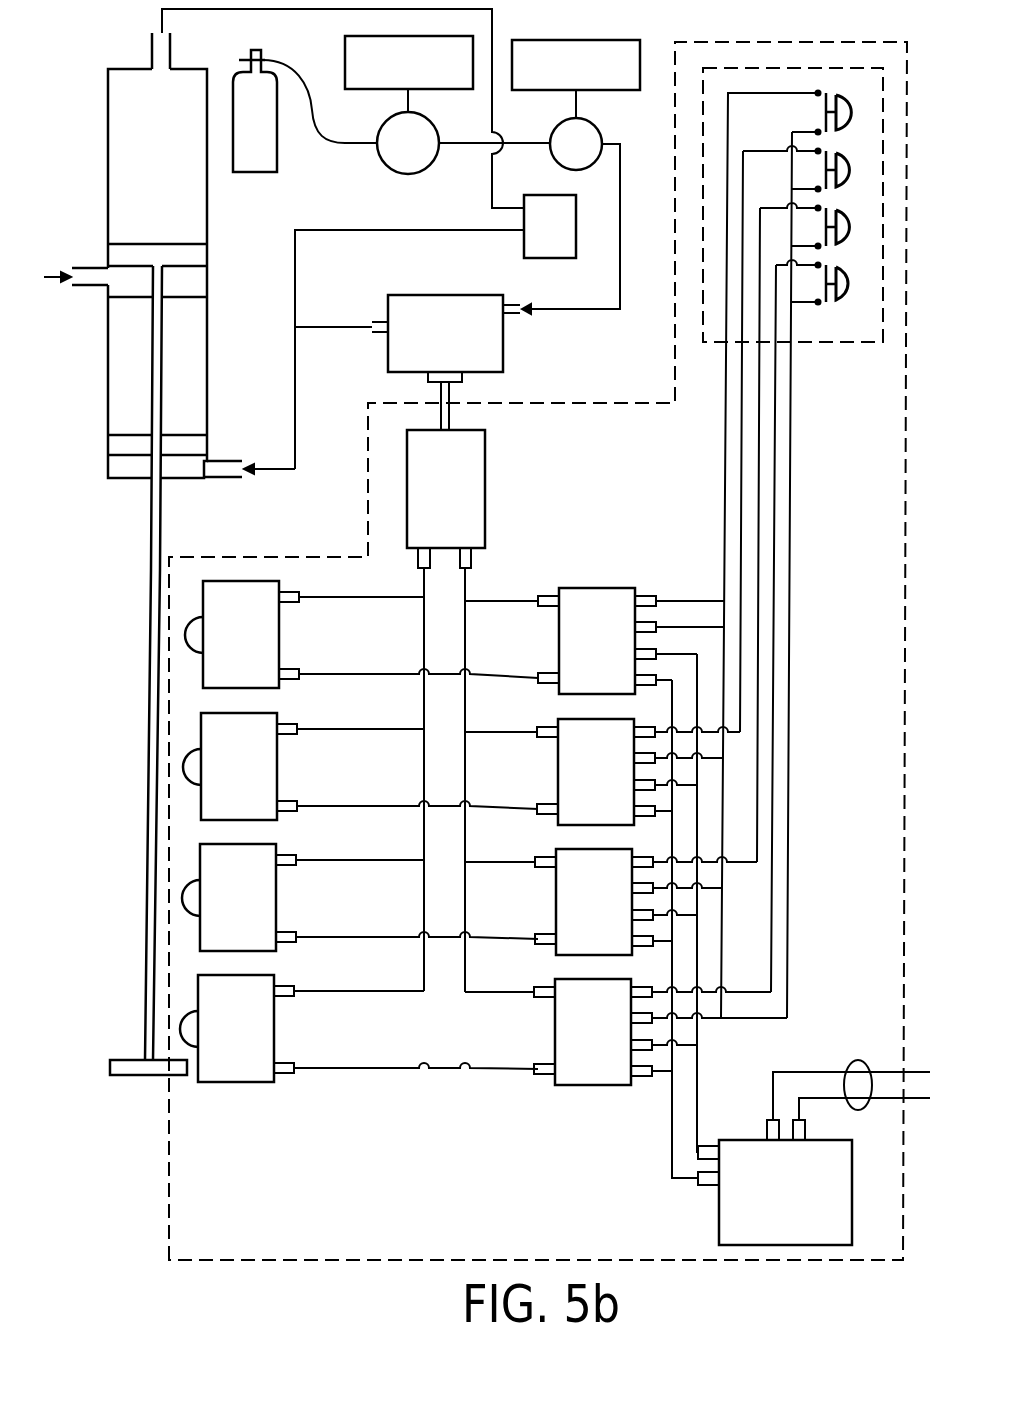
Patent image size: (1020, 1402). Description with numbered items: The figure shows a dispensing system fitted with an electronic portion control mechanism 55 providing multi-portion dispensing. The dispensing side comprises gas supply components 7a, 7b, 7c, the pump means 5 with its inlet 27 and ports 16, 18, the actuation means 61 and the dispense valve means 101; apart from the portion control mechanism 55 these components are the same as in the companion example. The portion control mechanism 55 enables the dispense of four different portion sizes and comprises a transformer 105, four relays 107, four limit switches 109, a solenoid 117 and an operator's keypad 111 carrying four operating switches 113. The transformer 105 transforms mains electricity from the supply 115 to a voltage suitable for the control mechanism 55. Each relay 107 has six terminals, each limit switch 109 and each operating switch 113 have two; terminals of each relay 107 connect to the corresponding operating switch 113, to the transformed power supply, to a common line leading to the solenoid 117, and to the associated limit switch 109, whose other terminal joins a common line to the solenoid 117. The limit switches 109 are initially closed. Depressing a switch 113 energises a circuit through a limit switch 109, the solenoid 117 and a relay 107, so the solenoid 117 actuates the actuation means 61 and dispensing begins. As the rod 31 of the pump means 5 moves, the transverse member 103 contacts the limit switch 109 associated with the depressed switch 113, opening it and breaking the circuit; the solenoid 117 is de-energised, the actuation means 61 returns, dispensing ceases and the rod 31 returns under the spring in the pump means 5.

The pump means 5 is at (93, 172).
The gas cylinder 7a is at (277, 153).
The pressure regulator 7b is at (415, 172).
The control valve 7c is at (598, 127).
The outlet port 16 is at (227, 460).
The cylinder inlet 18 is at (151, 47).
The fluid inlet 27 is at (95, 288).
The rod 31 is at (148, 513).
The portion control mechanism 55 is at (904, 793).
The actuation means 61 is at (451, 292).
The dispense valve means 101 is at (547, 262).
The transverse member 103 is at (128, 1077).
The transformer 105 is at (719, 1208).
The relay 107 is at (600, 1104).
The limit switch 109 is at (246, 1094).
The operator's keypad 111 is at (826, 350).
The operating switch 113 is at (860, 318).
The supply 115 is at (858, 1060).
The solenoid 117 is at (500, 485).